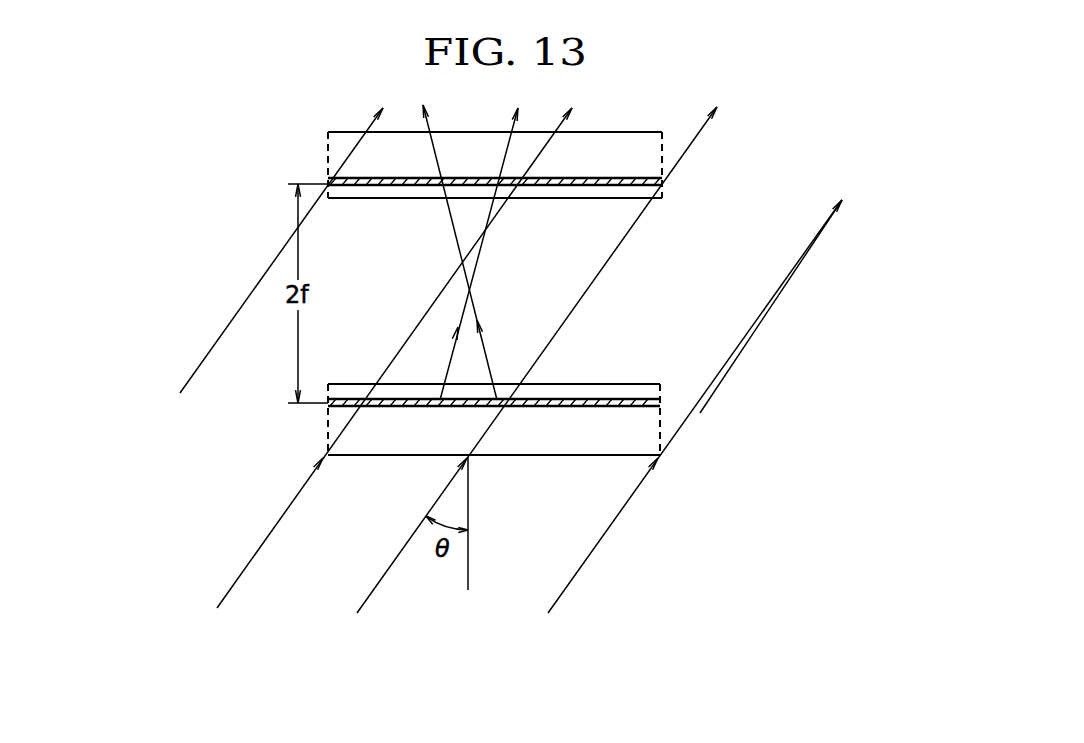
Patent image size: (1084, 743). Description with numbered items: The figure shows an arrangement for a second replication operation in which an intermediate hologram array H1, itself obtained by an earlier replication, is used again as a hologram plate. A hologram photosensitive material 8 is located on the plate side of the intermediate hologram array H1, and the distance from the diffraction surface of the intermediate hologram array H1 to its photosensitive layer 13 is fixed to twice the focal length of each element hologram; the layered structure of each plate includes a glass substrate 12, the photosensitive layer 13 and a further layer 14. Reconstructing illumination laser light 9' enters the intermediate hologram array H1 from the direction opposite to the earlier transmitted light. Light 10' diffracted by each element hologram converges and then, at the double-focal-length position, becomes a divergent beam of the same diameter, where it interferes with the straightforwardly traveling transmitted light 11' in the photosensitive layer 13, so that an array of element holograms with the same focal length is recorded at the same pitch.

The hologram photosensitive material 8 is at (736, 133).
The intermediate hologram array H1 is at (745, 385).
The glass substrate 12 is at (653, 152).
The photosensitive layer 13 is at (660, 182).
The transparent layer 14 is at (660, 198).
The reconstructing illumination laser light 9' is at (511, 360).
The diffracted light 10' is at (451, 252).
The transmitted light 11' is at (773, 306).